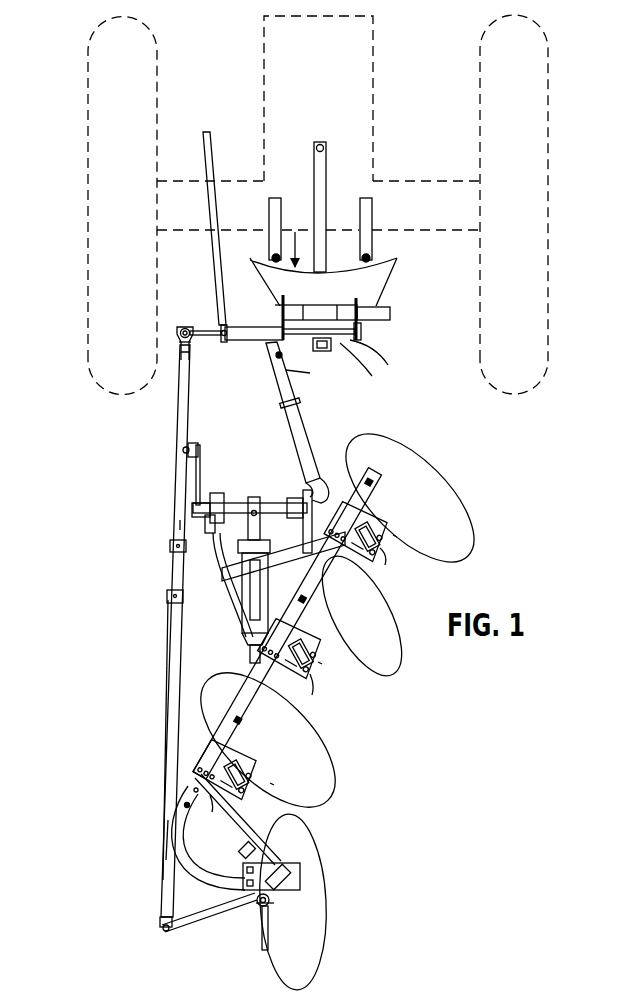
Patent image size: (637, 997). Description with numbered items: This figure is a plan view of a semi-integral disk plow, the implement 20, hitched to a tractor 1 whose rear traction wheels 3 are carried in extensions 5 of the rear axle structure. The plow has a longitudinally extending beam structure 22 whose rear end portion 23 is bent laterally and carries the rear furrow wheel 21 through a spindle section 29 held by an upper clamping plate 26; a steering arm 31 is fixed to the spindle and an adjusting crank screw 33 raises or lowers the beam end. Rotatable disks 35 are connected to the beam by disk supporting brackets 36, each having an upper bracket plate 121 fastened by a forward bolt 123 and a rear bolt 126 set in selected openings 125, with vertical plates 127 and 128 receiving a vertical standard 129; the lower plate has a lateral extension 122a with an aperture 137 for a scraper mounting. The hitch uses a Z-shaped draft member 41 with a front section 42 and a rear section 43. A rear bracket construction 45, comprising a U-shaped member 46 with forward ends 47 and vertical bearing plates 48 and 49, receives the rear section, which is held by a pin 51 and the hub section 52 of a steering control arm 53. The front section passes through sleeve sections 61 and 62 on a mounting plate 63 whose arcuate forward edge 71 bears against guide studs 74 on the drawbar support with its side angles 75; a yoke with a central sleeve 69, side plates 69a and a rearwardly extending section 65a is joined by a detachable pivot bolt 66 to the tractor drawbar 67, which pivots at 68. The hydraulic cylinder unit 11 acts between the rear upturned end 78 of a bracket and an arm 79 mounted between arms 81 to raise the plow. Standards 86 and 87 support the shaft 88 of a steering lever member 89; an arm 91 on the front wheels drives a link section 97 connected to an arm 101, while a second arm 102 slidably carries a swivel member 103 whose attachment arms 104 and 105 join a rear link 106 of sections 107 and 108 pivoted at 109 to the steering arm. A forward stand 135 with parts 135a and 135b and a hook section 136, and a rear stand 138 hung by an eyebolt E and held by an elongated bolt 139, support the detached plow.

The tractor 1 is at (262, 50).
The rear traction wheels 3 is at (88, 95).
The extensions 5 is at (226, 181).
The hydraulic cylinder unit 11 is at (242, 592).
The implement 20 is at (146, 683).
The rear furrow wheel 21 is at (312, 850).
The beam structure 22 is at (340, 556).
The rear end portion 23 is at (206, 880).
The upper clamping plate 26 is at (250, 848).
The spindle section 29 is at (270, 900).
The steering arm 31 is at (210, 912).
The adjusting crank screw 33 is at (262, 935).
The rotatable disks 35 is at (455, 530).
The disk supporting bracket 36 is at (394, 547).
The draft member 41 is at (302, 405).
The front section 42 is at (386, 310).
The rear section 43 is at (272, 512).
The rear bracket construction 45 is at (184, 552).
The U-shaped member 46 is at (216, 560).
The forward ends 47 is at (199, 490).
The vertical bearing plate 48 is at (208, 520).
The vertical bearing plate 49 is at (303, 492).
The pin 51 is at (220, 495).
The hub section 52 is at (192, 507).
The steering control arm 53 is at (194, 460).
The sleeve section 61 is at (292, 312).
The sleeve section 62 is at (362, 310).
The mounting plate 63 is at (386, 282).
The rearwardly extending section 65a is at (393, 360).
The detachable pivot bolt 66 is at (332, 346).
The drawbar 67 is at (322, 220).
The pivot 68 is at (321, 145).
The central sleeve 69 is at (321, 305).
The side plates 69a is at (375, 368).
The arcuate forward edge 71 is at (307, 248).
The guide studs 74 is at (272, 256).
The side angles 75 is at (270, 212).
The rear upturned end 78 is at (252, 658).
The arm 79 is at (254, 497).
The arms 81 is at (257, 510).
The standard 86 is at (283, 306).
The standard 87 is at (361, 334).
The shaft 88 is at (285, 344).
The steering lever member 89 is at (212, 343).
The arm 91 is at (248, 341).
The link section 97 is at (205, 151).
The arm 101 is at (224, 325).
The second arm 102 is at (178, 332).
The swivel member 103 is at (185, 327).
The attachment arm 104 is at (180, 345).
The attachment arm 105 is at (191, 352).
The rear link 106 is at (176, 522).
The front link section 107 is at (182, 432).
The link section 108 is at (175, 638).
The pivot 109 is at (162, 930).
The upper bracket plate 121 is at (380, 494).
The lateral extension 122a is at (315, 689).
The forward bolt 123 is at (368, 478).
The openings 125 is at (208, 762).
The rear bolt 126 is at (192, 789).
The vertical plate 127 is at (368, 528).
The vertical plate 128 is at (392, 538).
The vertical standard 129 is at (383, 523).
The forward stand 135 is at (274, 360).
The stand part 135a is at (278, 360).
The stand part 135b is at (319, 371).
The hook section 136 is at (284, 405).
The aperture 137 is at (398, 537).
The rear stand 138 is at (206, 826).
The elongated bolt 139 is at (285, 862).
The eyebolt E is at (183, 806).